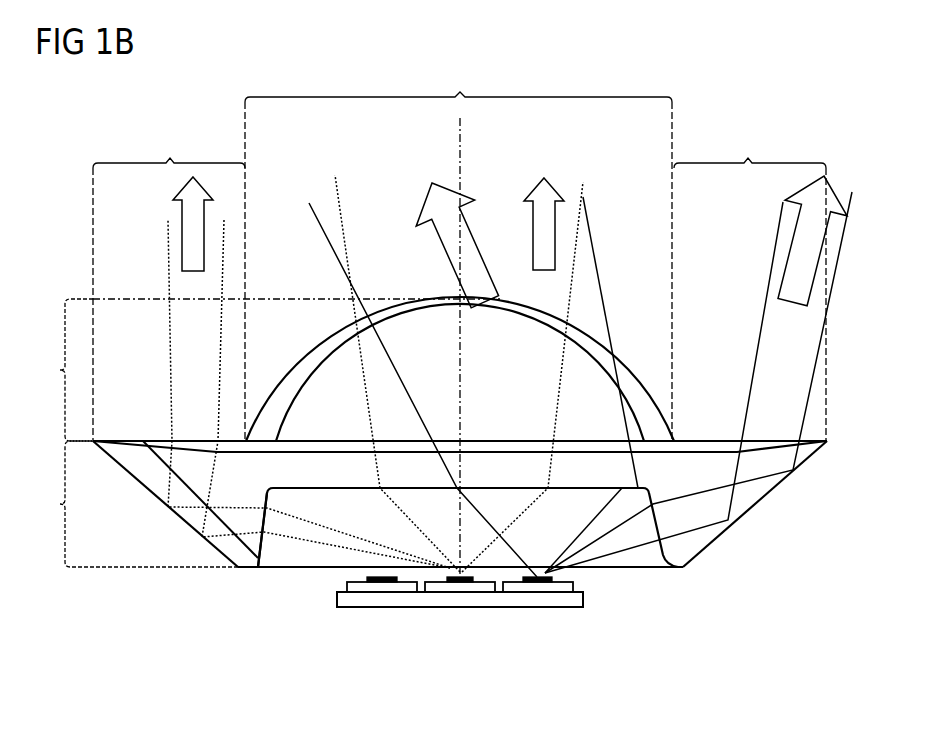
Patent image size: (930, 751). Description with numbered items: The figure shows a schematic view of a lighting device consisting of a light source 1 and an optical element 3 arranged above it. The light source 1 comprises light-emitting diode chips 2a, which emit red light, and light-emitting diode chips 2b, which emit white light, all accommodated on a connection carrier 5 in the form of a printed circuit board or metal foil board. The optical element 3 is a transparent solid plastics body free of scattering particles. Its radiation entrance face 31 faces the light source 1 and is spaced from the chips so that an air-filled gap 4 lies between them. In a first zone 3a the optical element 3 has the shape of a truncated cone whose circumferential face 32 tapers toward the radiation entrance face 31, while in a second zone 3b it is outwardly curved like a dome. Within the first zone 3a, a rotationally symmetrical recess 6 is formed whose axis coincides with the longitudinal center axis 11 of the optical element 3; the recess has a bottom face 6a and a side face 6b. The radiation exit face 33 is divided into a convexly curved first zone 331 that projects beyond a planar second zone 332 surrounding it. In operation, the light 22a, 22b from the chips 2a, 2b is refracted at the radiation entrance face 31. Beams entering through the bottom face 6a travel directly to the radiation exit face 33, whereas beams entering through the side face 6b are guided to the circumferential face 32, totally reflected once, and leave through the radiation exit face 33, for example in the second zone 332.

The light source 1 is at (460, 623).
The light-emitting diode chip 2a is at (538, 593).
The light-emitting diode chip 2b is at (383, 593).
The optical element 3 is at (631, 357).
The first zone of the optical element 3a is at (134, 504).
The second zone of the optical element 3b is at (265, 370).
The gap 4 is at (362, 572).
The connection carrier 5 is at (430, 608).
The recess 6 is at (450, 538).
The bottom face of the recess 6a is at (582, 491).
The side face of the recess 6b is at (289, 545).
The longitudinal center axis 11 is at (462, 131).
The light 22a is at (699, 537).
The light 22b is at (218, 543).
The radiation entrance face 31 is at (268, 568).
The circumferential face 32 is at (757, 503).
The radiation exit face 33 is at (547, 313).
The first zone of the radiation exit face 331 is at (458, 250).
The second zone of the radiation exit face 332 is at (474, 283).